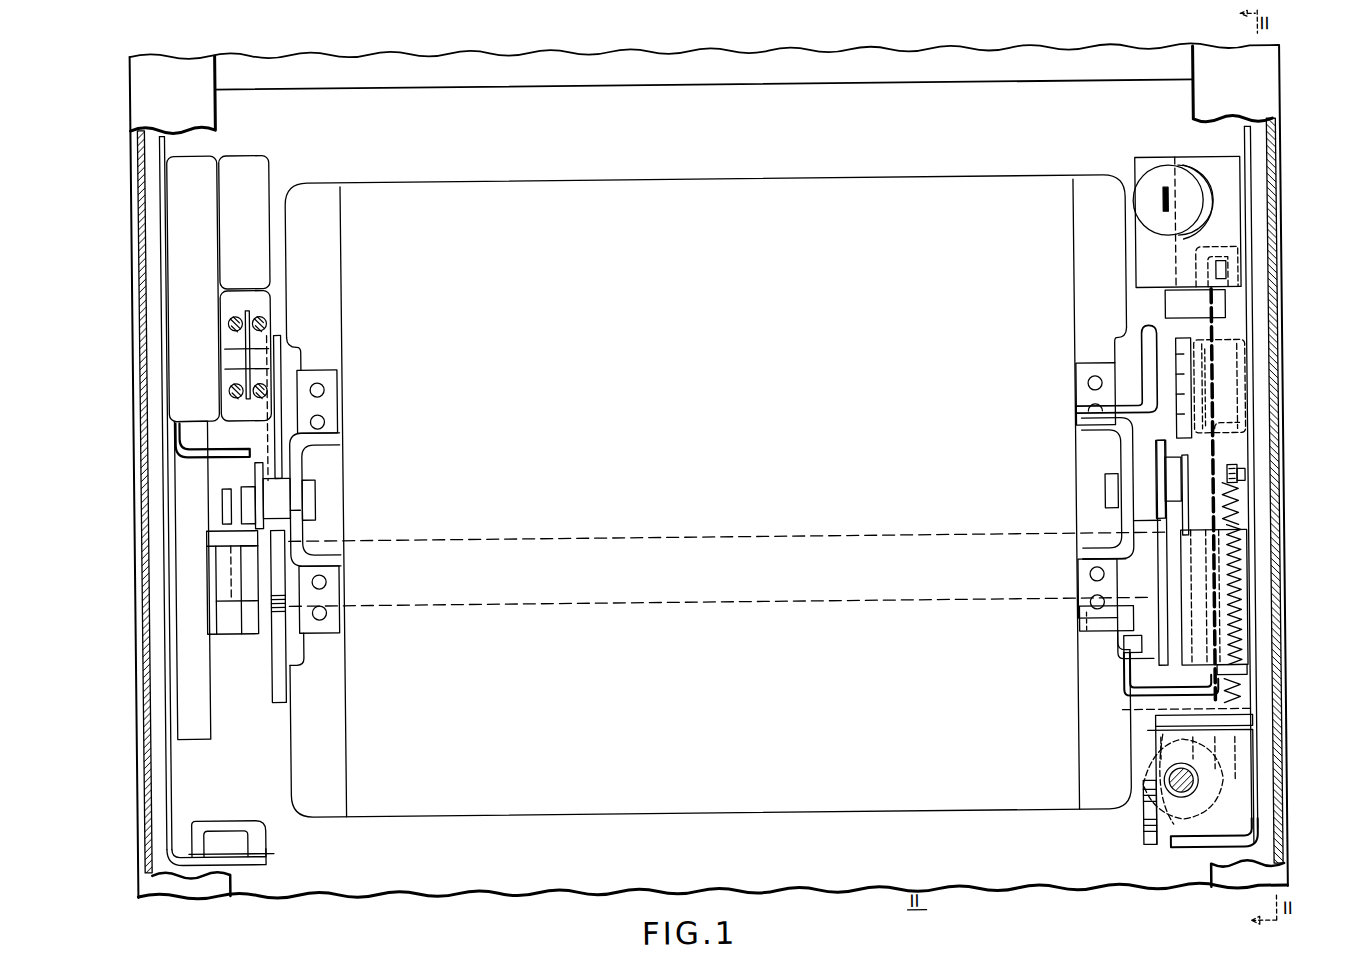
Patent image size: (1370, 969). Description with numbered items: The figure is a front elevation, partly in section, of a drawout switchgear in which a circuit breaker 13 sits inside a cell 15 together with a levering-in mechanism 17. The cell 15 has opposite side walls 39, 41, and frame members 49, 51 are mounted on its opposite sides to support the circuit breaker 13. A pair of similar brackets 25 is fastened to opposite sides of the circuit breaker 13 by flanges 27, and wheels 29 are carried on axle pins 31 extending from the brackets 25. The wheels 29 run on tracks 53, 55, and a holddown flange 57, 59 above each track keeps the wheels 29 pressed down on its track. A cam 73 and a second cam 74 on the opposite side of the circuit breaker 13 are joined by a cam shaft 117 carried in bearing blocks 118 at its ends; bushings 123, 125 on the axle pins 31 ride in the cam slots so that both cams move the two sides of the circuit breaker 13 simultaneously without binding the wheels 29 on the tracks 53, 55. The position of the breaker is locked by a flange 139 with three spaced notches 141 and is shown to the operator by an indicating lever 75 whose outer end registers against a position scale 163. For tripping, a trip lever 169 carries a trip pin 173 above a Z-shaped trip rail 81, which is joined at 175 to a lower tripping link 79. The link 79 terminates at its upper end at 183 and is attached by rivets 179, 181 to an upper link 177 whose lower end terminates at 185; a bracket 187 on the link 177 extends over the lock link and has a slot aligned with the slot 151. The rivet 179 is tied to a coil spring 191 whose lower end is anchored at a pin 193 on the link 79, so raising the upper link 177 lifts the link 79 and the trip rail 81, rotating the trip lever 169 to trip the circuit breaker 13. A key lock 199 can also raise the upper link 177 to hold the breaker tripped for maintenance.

The circuit breaker 13 is at (806, 752).
The cell 15 is at (1283, 645).
The levering-in mechanism 17 is at (1190, 718).
The bracket 25 is at (305, 460).
The flange 27 is at (320, 372).
The wheel 29 is at (243, 486).
The axle pin 31 is at (308, 494).
The side wall 39 is at (136, 188).
The side wall 41 is at (1285, 183).
The frame member 49 is at (178, 791).
The frame member 51 is at (1262, 804).
The track 53 is at (247, 627).
The track 55 is at (1207, 698).
The holddown flange 57 is at (222, 459).
The holddown flange 59 is at (1190, 474).
The cam 73 is at (1115, 566).
The second cam 74 is at (276, 680).
The indicating lever 75 is at (1177, 391).
The tripping link 79 is at (1235, 516).
The trip rail 81 is at (1120, 676).
The cam shaft 117 is at (725, 555).
The bearing block 118 is at (229, 627).
The bushing 123 is at (1130, 531).
The bushing 125 is at (277, 512).
The flange 139 is at (1140, 795).
The notch 141 is at (1132, 747).
The slot 151 is at (1210, 420).
The position scale 163 is at (1158, 348).
The trip lever 169 is at (1122, 666).
The trip pin 173 is at (1080, 651).
The joint 175 is at (1230, 749).
The upper link 177 is at (1207, 334).
The rivet 179 is at (1245, 494).
The rivet 181 is at (1240, 683).
The upper end of link 183 is at (1220, 440).
The lower end of link 185 is at (1120, 723).
The bracket 187 is at (1250, 356).
The coil spring 191 is at (1210, 554).
The pin 193 is at (1240, 601).
The key lock 199 is at (1151, 200).